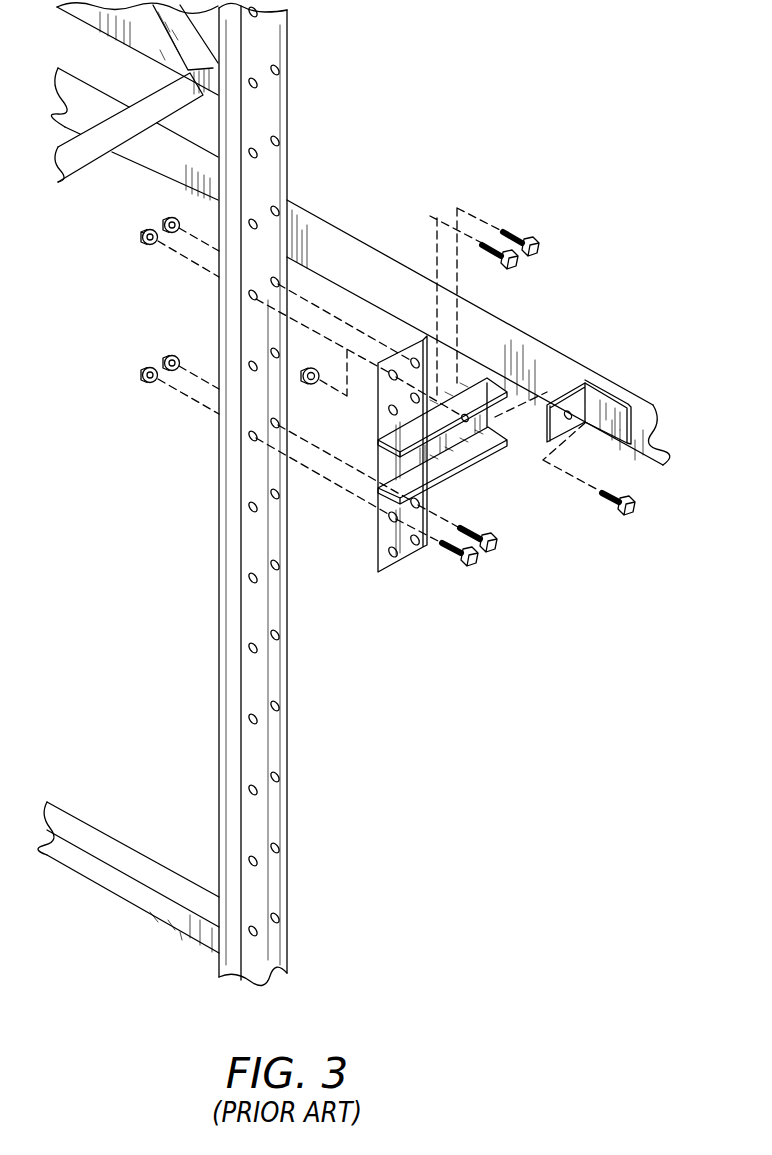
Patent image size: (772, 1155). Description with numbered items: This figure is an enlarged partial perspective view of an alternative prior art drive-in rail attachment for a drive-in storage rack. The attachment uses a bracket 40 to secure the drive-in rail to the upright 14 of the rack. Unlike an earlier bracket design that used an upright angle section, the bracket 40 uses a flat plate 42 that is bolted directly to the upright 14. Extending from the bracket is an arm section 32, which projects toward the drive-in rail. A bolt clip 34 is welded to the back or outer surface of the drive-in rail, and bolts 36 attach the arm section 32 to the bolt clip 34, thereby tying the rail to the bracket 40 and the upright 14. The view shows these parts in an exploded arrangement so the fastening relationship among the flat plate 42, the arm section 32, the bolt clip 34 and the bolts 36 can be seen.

The upright 14 is at (278, 823).
The arm section 32 is at (445, 438).
The bolt clip 34 is at (601, 406).
The bolts 36 is at (636, 512).
The bracket 40 is at (373, 537).
The flat plate 42 is at (402, 549).